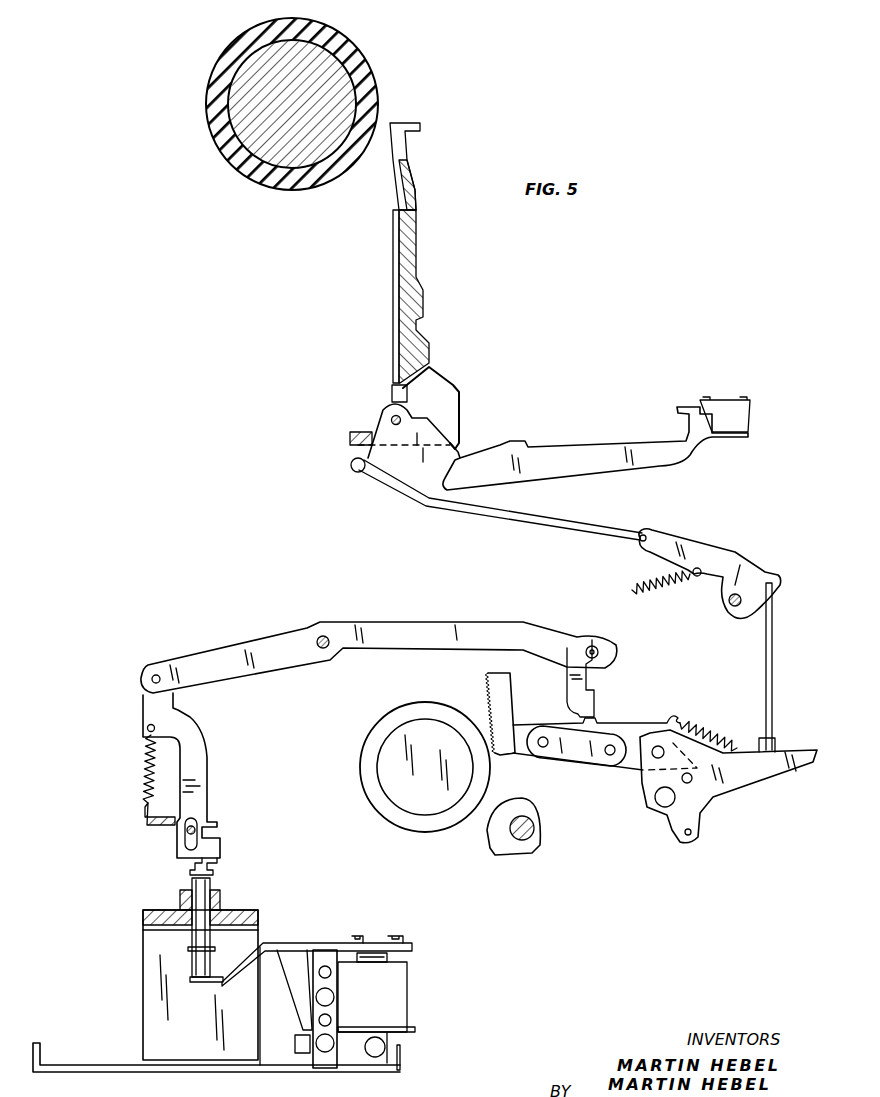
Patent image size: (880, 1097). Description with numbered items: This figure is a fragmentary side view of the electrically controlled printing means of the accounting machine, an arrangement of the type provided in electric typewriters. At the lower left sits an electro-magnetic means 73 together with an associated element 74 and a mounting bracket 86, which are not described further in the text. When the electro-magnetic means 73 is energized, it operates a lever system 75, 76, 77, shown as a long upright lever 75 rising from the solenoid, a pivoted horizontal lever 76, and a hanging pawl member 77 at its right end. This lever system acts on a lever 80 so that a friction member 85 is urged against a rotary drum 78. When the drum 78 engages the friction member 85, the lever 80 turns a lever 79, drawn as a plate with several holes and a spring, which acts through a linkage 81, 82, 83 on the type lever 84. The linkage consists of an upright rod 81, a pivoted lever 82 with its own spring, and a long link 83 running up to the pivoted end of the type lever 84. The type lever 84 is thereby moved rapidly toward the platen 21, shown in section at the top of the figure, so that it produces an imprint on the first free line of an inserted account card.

The platen 21 is at (377, 92).
The electro-magnetic means 73 is at (387, 998).
The solenoid 74 is at (213, 885).
The lever system 75 is at (195, 768).
The lever system 76 is at (205, 663).
The lever system 77 is at (580, 680).
The rotary drum 78 is at (370, 785).
The lever 79 is at (687, 810).
The lever 80 is at (580, 752).
The linkage 81 is at (763, 647).
The linkage 82 is at (663, 550).
The linkage 83 is at (405, 493).
The type lever 84 is at (578, 457).
The friction member 85 is at (493, 692).
The bracket 86 is at (347, 945).